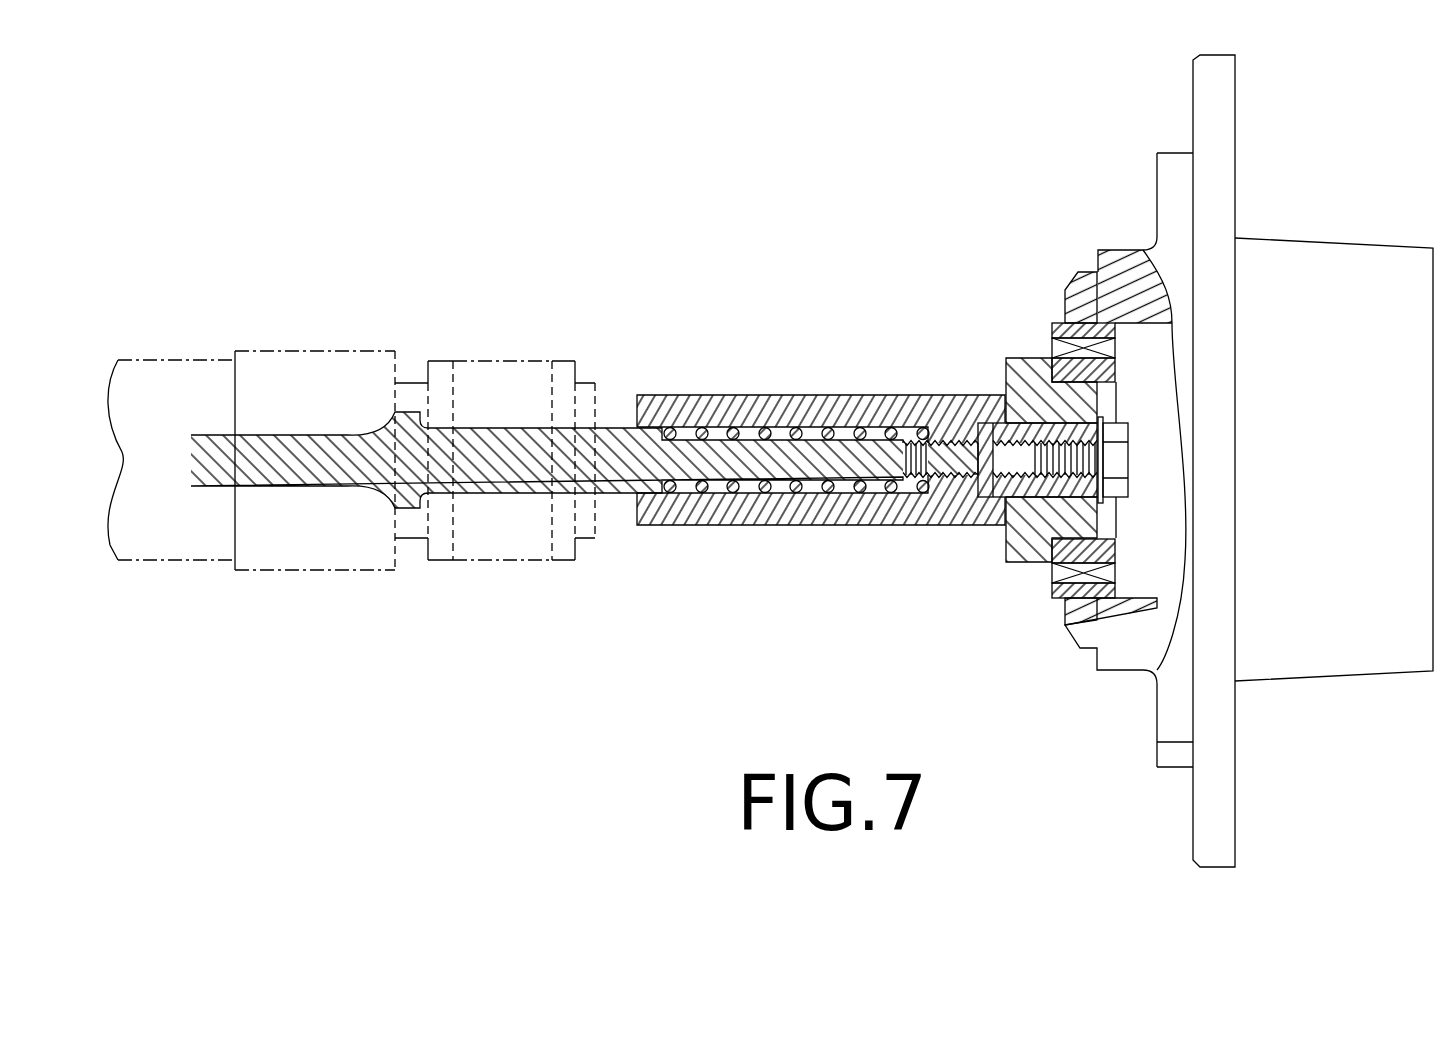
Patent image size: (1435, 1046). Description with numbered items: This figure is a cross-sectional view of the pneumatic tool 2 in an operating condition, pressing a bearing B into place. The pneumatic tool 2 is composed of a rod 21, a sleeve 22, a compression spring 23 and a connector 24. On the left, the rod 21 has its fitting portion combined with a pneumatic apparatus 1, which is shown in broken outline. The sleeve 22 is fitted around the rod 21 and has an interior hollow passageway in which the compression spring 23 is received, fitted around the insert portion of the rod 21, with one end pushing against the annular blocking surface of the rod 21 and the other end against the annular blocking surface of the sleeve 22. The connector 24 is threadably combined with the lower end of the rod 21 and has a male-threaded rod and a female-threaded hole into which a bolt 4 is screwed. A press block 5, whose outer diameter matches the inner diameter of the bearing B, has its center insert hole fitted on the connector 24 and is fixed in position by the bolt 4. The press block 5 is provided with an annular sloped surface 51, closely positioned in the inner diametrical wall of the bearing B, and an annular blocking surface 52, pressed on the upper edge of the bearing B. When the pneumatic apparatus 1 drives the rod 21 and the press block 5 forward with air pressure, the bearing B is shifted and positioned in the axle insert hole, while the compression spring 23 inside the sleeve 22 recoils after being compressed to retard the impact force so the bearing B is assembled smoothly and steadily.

The pneumatic apparatus 1 is at (328, 365).
The pneumatic tool 2 is at (760, 343).
The rod 21 is at (622, 445).
The sleeve 22 is at (832, 405).
The compression spring 23 is at (702, 428).
The connector 24 is at (988, 423).
The bolt 4 is at (1053, 467).
The press block 5 is at (1022, 378).
The annular sloped surface 51 is at (1063, 318).
The annular blocking surface 52 is at (1050, 356).
The bearing B is at (988, 400).